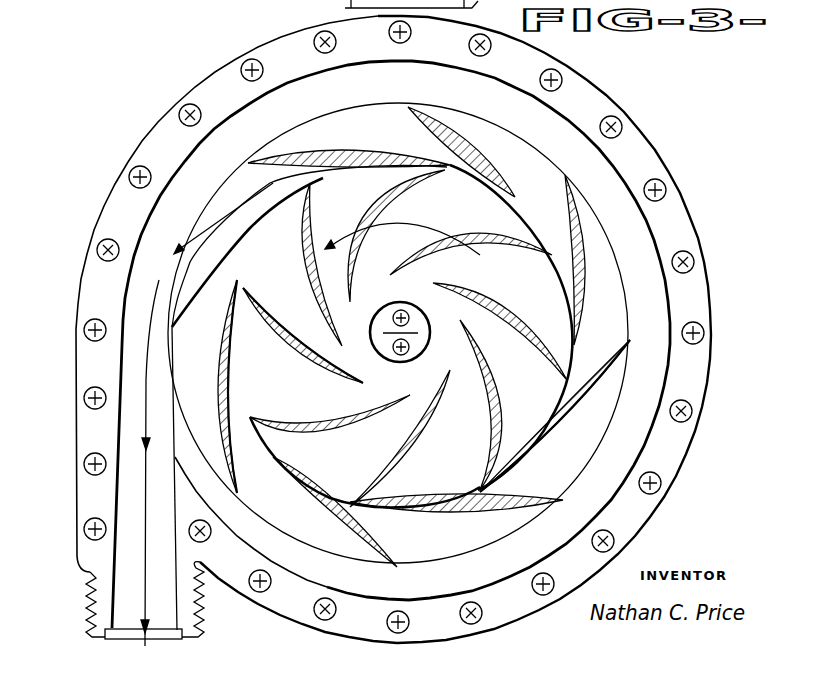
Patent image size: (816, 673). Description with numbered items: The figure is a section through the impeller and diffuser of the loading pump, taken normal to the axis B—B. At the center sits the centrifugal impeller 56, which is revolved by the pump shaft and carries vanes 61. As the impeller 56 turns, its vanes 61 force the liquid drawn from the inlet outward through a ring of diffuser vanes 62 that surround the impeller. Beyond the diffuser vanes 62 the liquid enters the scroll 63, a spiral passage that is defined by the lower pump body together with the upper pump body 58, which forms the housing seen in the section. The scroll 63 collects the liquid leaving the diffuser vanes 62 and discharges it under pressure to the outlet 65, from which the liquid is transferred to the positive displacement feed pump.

The centrifugal impeller 56 is at (525, 287).
The upper pump body 58 is at (640, 144).
The vanes 61 is at (518, 318).
The diffuser vanes 62 is at (503, 176).
The scroll 63 is at (207, 412).
The outlet 65 is at (126, 601).
The axis B— B is at (400, 332).